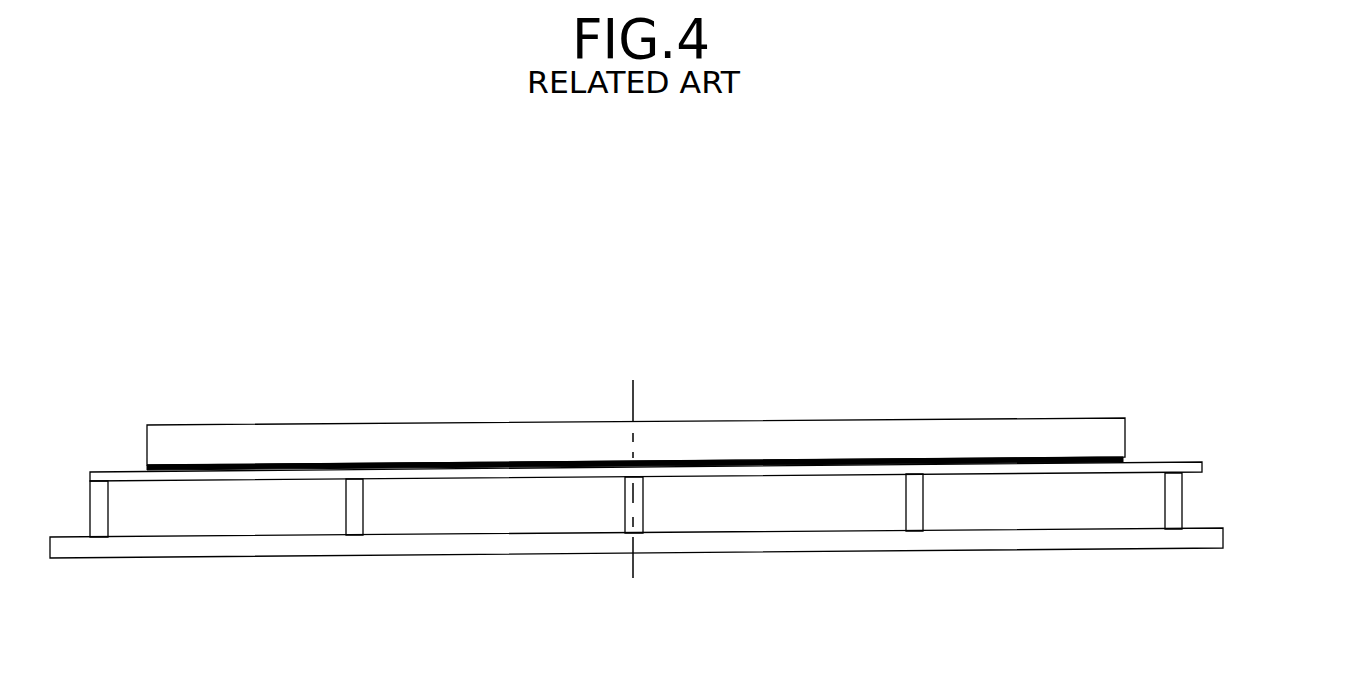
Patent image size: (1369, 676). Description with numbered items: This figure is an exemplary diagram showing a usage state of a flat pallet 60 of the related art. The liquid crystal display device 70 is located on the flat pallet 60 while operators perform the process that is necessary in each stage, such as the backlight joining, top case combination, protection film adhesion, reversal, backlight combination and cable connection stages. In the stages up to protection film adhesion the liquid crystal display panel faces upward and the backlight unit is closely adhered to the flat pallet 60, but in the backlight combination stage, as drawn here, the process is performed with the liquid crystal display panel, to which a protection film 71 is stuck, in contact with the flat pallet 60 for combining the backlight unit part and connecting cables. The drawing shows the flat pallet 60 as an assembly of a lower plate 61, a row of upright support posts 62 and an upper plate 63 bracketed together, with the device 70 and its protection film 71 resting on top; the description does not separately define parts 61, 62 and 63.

The flat pallet 60 is at (706, 512).
The base plate 61 is at (671, 551).
The support pins 62 is at (1177, 495).
The support plate 63 is at (1203, 467).
The liquid crystal display device 70 is at (1093, 443).
The protection film 71 is at (1123, 458).